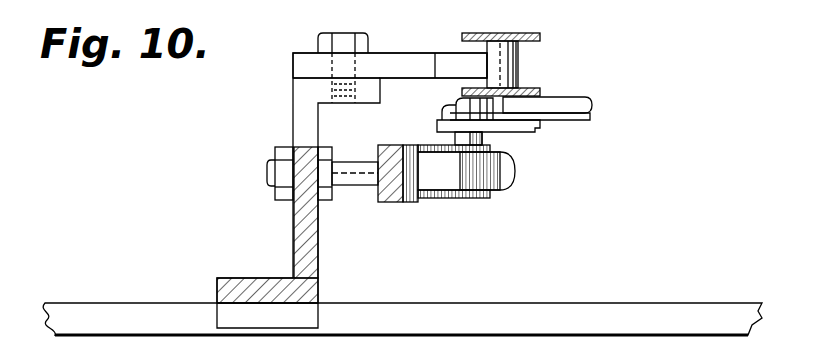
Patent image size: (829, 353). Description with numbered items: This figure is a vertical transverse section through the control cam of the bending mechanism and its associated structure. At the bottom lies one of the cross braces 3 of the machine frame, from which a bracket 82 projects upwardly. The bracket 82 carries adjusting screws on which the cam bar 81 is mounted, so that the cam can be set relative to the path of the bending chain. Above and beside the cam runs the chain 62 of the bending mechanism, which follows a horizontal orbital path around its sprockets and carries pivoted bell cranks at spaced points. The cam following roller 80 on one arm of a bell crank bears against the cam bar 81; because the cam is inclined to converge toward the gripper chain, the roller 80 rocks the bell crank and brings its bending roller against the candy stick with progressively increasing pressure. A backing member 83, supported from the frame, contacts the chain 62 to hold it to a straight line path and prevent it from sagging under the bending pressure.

The cross brace 3 is at (619, 316).
The chain 62 is at (540, 42).
The cam following roller 80 is at (515, 176).
The cam bar 81 is at (423, 205).
The bracket 82 is at (308, 256).
The backing member 83 is at (444, 58).